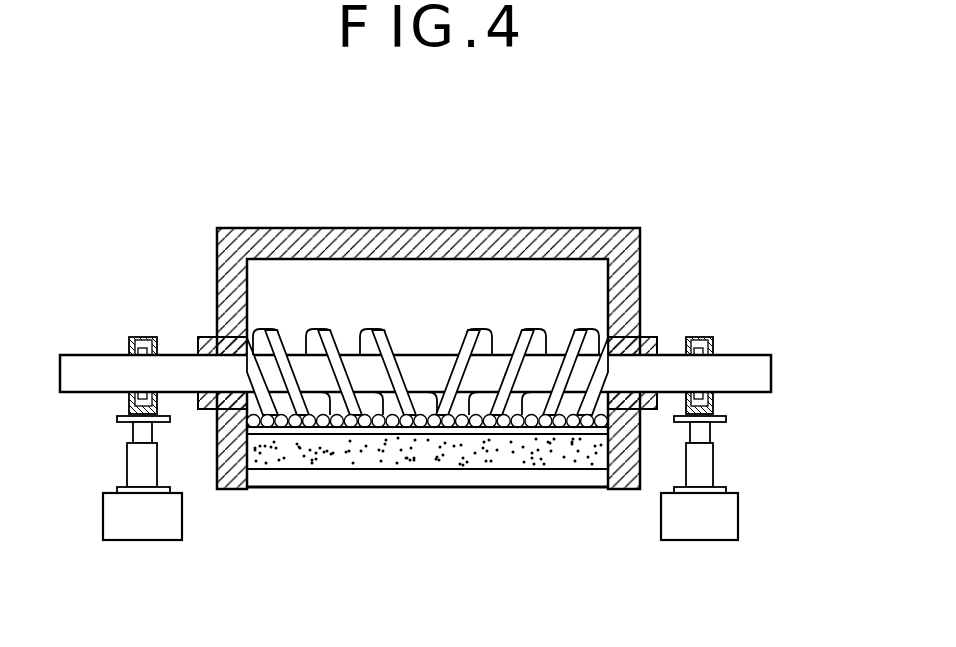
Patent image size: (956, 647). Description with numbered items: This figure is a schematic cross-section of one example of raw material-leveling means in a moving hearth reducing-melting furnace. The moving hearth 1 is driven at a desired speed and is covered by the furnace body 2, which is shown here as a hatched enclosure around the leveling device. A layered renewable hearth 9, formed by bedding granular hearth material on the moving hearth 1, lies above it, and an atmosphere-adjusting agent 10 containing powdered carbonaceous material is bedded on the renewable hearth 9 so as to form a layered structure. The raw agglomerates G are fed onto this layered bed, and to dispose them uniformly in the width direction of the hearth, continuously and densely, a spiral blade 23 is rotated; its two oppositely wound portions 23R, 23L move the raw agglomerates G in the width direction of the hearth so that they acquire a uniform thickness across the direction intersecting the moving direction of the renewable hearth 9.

The moving hearth 1 is at (530, 490).
The furnace body 2 is at (255, 223).
The renewable hearth 9 is at (583, 460).
The atmosphere-adjusting agent 10 is at (463, 432).
The spiral blade 23 is at (415, 277).
The spiral blade (right-hand portion) 23R is at (322, 330).
The spiral blade (left-hand portion) 23L is at (533, 330).
The raw agglomerates G is at (265, 425).